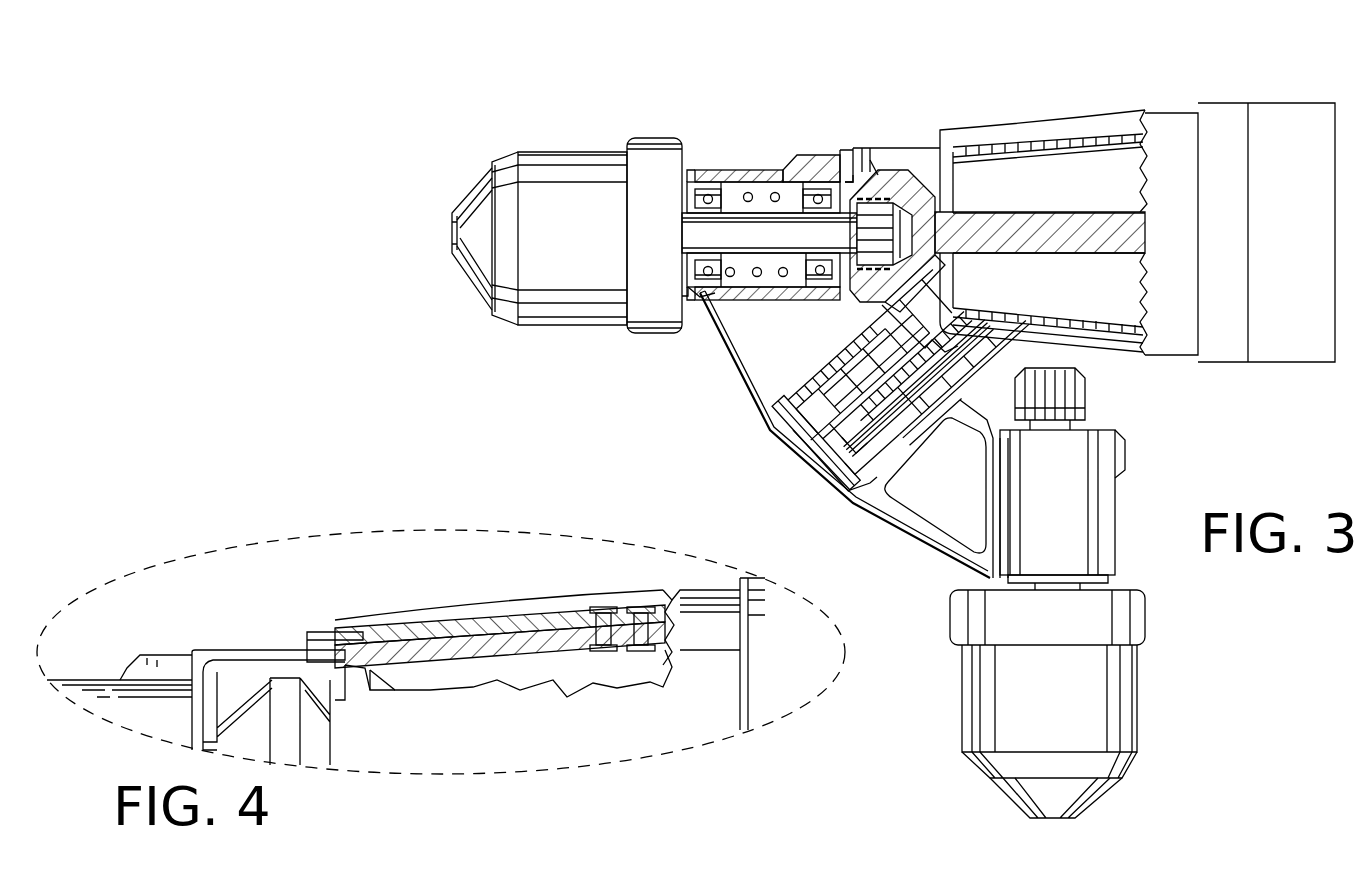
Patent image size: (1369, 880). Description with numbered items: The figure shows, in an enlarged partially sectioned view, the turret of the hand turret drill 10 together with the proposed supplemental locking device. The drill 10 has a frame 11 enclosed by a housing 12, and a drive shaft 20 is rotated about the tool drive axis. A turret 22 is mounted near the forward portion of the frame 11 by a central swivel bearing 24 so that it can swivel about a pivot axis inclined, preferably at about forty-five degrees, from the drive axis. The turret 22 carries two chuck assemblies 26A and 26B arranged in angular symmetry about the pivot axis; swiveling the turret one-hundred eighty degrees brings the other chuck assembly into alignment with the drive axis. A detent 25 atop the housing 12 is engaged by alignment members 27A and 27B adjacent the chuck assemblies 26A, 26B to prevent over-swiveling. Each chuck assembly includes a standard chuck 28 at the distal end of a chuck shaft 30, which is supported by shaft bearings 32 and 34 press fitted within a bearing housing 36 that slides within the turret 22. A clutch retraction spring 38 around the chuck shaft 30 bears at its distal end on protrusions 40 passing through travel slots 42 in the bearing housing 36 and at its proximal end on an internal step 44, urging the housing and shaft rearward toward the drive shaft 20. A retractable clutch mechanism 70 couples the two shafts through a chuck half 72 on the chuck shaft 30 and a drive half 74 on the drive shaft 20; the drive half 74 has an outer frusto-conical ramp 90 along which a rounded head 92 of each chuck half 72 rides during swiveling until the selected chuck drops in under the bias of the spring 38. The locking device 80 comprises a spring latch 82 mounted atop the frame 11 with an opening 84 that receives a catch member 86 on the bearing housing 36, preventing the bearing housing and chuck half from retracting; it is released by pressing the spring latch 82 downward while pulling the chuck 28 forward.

In FIG. 3, the hand turret drill 10 is at (1154, 78).
In FIG. 3, the frame 11 is at (990, 318).
In FIG. 4, the frame 11 is at (462, 662).
In FIG. 3, the housing 12 is at (1268, 103).
In FIG. 4, the housing 12 is at (695, 590).
In FIG. 3, the drive shaft 20 is at (993, 211).
In FIG. 3, the turret 22 is at (750, 384).
In FIG. 3, the central swivel bearing 24 is at (840, 372).
In FIG. 3, the detent 25 is at (837, 150).
In FIG. 3, the chuck assembly 26A is at (570, 216).
In FIG. 3, the chuck assembly 26B is at (1063, 713).
In FIG. 3, the alignment member 27A is at (795, 168).
In FIG. 3, the alignment member 27B is at (1120, 466).
In FIG. 3, the chuck 28 is at (583, 249).
In FIG. 3, the chuck shaft 30 is at (732, 302).
In FIG. 3, the shaft bearing 32 is at (705, 170).
In FIG. 3, the shaft bearing 34 is at (826, 155).
In FIG. 3, the bearing housing 36 is at (686, 303).
In FIG. 4, the bearing housing 36 is at (205, 705).
In FIG. 3, the clutch retraction spring 38 is at (730, 180).
In FIG. 3, the protrusions 40 is at (682, 237).
In FIG. 3, the travel slots 42 is at (750, 182).
In FIG. 3, the internal step 44 is at (769, 235).
In FIG. 3, the clutch mechanism 70 is at (871, 167).
In FIG. 3, the chuck half 72 is at (878, 268).
In FIG. 3, the drive half 74 is at (915, 200).
In FIG. 4, the drive half 74 is at (240, 655).
In FIG. 4, the locking device 80 is at (292, 596).
In FIG. 4, the spring latch 82 is at (400, 625).
In FIG. 4, the opening 84 is at (305, 645).
In FIG. 4, the catch member 86 is at (342, 695).
In FIG. 3, the frusto-conical ramp 90 is at (884, 172).
In FIG. 3, the rounded head 92 is at (980, 212).